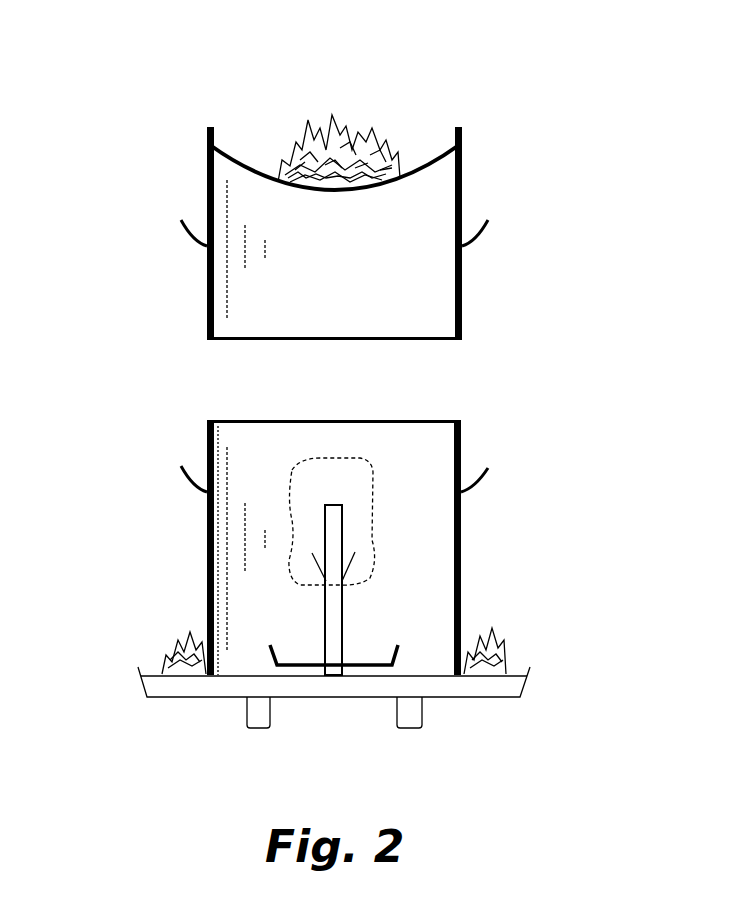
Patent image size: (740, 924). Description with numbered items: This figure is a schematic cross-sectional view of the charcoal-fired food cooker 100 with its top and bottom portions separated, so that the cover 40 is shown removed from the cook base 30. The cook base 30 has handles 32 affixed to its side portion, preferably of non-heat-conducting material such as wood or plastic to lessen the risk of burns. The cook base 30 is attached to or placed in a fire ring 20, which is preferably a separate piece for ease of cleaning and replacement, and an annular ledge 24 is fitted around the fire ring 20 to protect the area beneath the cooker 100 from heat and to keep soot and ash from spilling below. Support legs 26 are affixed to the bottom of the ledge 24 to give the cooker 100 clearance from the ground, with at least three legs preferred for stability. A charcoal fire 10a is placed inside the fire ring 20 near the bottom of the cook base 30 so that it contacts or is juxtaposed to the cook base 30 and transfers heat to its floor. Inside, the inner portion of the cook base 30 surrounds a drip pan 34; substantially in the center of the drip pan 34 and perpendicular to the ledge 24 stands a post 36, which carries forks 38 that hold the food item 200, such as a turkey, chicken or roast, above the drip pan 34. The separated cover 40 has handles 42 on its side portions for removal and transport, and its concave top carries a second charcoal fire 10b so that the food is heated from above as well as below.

The charcoal-fired cooker 100 is at (565, 66).
The charcoal fire 10a is at (507, 637).
The charcoal fire 10b is at (340, 123).
The fire ring 20 is at (528, 668).
The annular ledge 24 is at (136, 686).
The support legs 26 is at (272, 707).
The cook base 30 is at (480, 434).
The handles 32 is at (192, 490).
The drip pan 34 is at (302, 660).
The post 36 is at (343, 625).
The fork 38 is at (355, 556).
The cover 40 is at (522, 170).
The handles 42 is at (190, 246).
The food item 200 is at (372, 478).